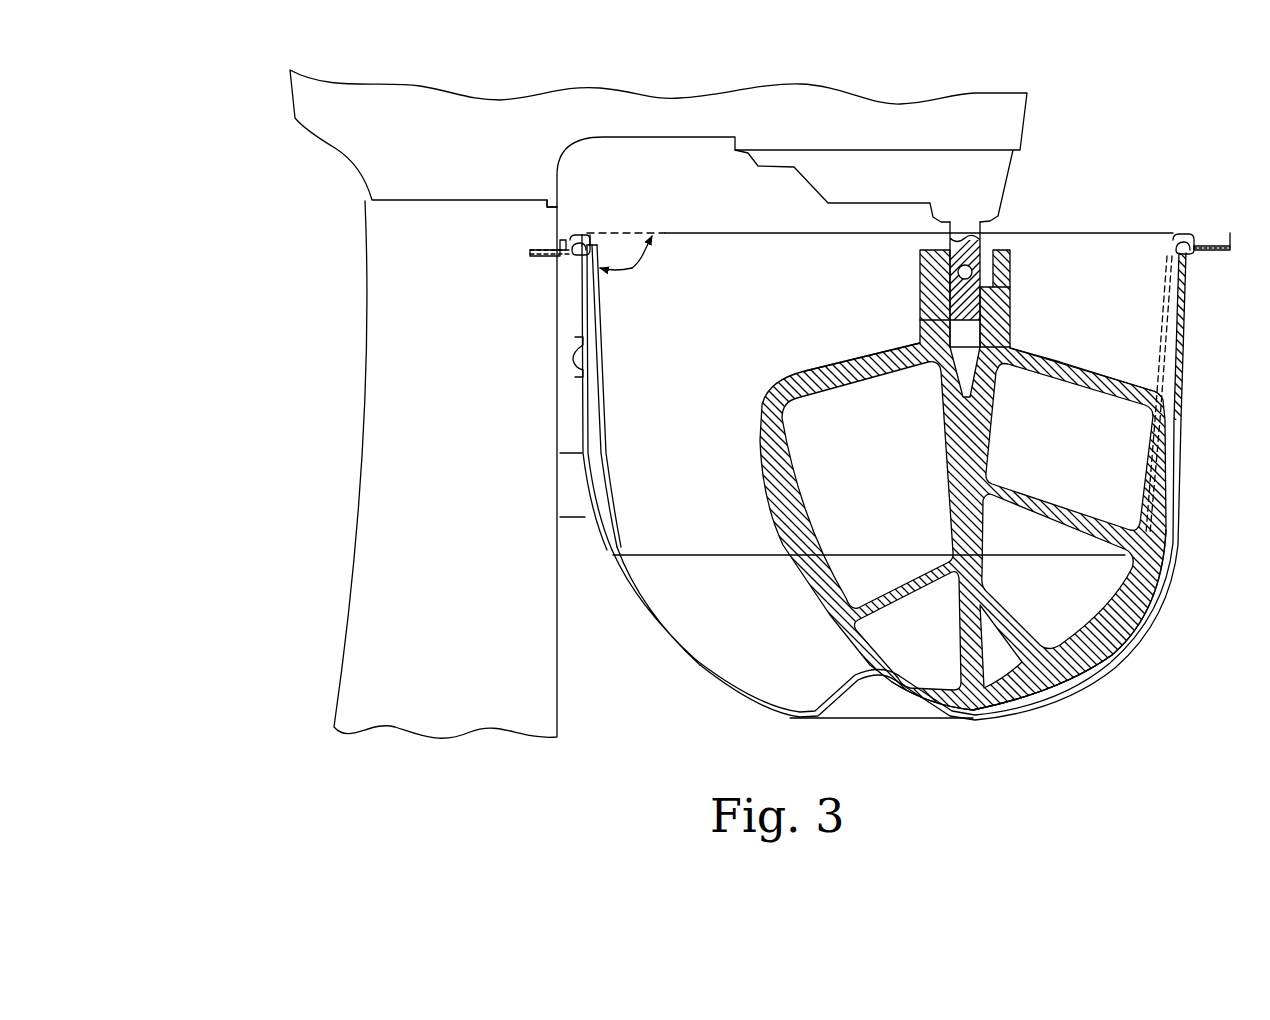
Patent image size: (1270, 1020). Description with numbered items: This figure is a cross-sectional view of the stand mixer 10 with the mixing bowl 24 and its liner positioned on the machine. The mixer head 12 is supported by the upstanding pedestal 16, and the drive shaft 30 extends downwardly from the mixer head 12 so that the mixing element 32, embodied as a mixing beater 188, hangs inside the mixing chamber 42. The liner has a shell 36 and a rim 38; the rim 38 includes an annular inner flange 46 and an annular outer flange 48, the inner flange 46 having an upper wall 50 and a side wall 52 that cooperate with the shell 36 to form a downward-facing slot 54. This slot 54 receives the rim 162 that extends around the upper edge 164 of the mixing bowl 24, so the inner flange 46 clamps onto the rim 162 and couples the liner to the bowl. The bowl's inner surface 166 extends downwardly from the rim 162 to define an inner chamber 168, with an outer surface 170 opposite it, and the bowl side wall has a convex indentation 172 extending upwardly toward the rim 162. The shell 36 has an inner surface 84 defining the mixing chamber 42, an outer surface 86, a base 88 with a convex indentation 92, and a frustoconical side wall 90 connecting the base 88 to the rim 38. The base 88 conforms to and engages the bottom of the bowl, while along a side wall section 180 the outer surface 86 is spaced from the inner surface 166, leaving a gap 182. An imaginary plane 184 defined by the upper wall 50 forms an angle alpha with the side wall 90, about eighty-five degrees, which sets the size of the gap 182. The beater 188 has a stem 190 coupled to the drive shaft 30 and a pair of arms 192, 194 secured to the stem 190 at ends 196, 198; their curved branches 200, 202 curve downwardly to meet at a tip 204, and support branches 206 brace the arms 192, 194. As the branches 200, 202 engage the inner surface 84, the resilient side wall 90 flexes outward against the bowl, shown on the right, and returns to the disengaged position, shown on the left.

The stand mixer appliance 10 is at (235, 112).
The mixer head 12 is at (790, 100).
The upstanding pedestal 16 is at (352, 440).
The mixing bowl 24 is at (1088, 650).
The drive shaft 30 is at (970, 238).
The mixing element 32 is at (1012, 278).
The shell 36 is at (1120, 262).
The rim 38 is at (1215, 212).
The mixing chamber 42 is at (708, 262).
The annular inner flange 46 is at (560, 205).
The annular outer flange 48 is at (520, 250).
The upper wall 50 is at (580, 240).
The side wall 52 is at (560, 248).
The downward-facing slot 54 is at (572, 265).
The inner surface 84 is at (1178, 362).
The outer surface 86 is at (597, 520).
The base 88 is at (690, 663).
The side wall 90 is at (630, 470).
The convex indentation 92 is at (870, 688).
The rim 162 is at (590, 245).
The upper edge 164 is at (570, 243).
The inner surface 166 is at (587, 290).
The inner chamber 168 is at (585, 388).
The outer surface 170 is at (585, 425).
The convex indentation 172 is at (855, 718).
The side wall section 180 is at (602, 432).
The gap 182 is at (585, 490).
The imaginary plane 184 is at (650, 233).
The mixing beater 188 is at (1020, 308).
The stem 190 is at (1000, 343).
The arm 192 is at (840, 362).
The arm 194 is at (1105, 377).
The end 196 is at (905, 360).
The end 198 is at (1027, 360).
The curved branch 200 is at (768, 445).
The curved branch 202 is at (1160, 437).
The tip 204 is at (960, 695).
The support branches 206 is at (887, 590).